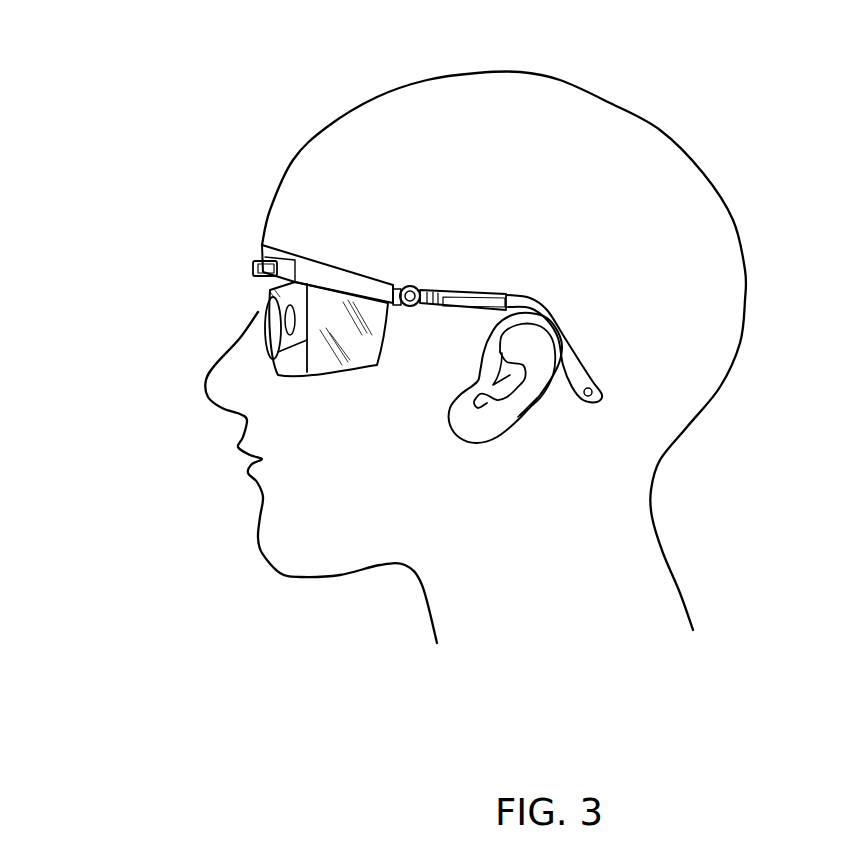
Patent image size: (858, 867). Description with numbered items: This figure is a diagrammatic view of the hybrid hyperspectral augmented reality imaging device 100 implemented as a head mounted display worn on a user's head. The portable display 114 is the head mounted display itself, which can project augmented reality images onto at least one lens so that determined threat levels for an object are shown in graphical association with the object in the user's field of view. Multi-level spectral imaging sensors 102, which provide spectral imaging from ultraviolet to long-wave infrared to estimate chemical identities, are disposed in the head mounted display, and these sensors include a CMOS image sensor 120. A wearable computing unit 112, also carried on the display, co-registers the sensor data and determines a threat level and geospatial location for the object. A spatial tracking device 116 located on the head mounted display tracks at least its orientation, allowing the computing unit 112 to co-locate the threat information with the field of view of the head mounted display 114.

The imaging device 100 is at (560, 270).
The multi-level spectral imaging sensors 102 is at (241, 270).
The computing unit 112 is at (440, 310).
The portable display 114 is at (375, 378).
The spatial tracking device 116 is at (412, 286).
The CMOS image sensor 120 is at (478, 293).